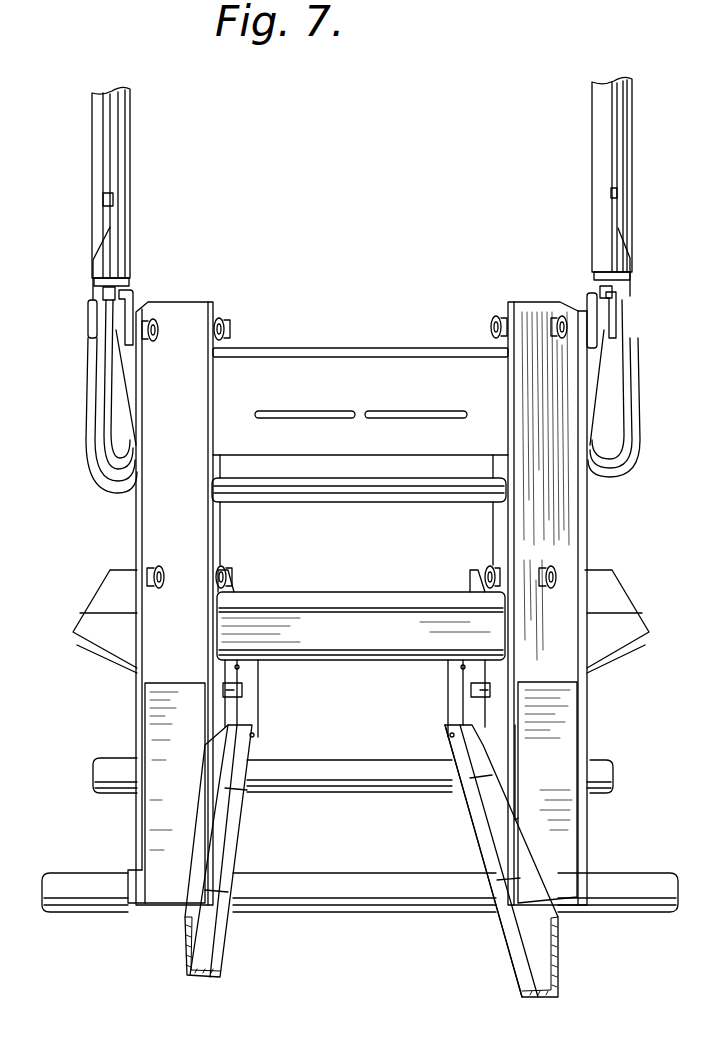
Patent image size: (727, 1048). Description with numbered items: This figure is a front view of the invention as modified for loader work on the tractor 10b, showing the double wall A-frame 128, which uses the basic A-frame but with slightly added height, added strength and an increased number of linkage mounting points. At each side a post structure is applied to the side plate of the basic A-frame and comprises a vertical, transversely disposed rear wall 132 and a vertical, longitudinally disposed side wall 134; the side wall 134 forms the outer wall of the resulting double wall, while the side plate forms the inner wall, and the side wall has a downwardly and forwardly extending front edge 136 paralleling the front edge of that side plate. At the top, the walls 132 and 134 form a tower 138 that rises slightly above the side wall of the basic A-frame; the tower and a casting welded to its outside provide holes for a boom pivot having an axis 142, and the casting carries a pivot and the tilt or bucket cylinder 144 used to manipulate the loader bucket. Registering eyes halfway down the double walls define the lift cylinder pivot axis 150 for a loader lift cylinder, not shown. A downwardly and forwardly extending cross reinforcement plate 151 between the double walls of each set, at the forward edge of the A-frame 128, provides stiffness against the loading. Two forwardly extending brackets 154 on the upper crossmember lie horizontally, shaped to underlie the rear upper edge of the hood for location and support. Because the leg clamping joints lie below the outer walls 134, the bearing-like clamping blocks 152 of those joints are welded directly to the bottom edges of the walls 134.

The tilt or bucket cylinder 144 is at (123, 173).
The boom pivot axis 142 is at (258, 327).
The double wall A-frame 128 is at (495, 305).
The tower 138 is at (508, 318).
The forwardly extending brackets 154 is at (301, 408).
The lift cylinder pivot axis 150 is at (546, 577).
The side wall 134 is at (138, 500).
The rear wall 132 is at (172, 514).
The front edge 136 is at (135, 700).
The tractor 10b is at (108, 762).
The cross reinforcement plate 151 is at (182, 813).
The clamping blocks 152 is at (593, 890).